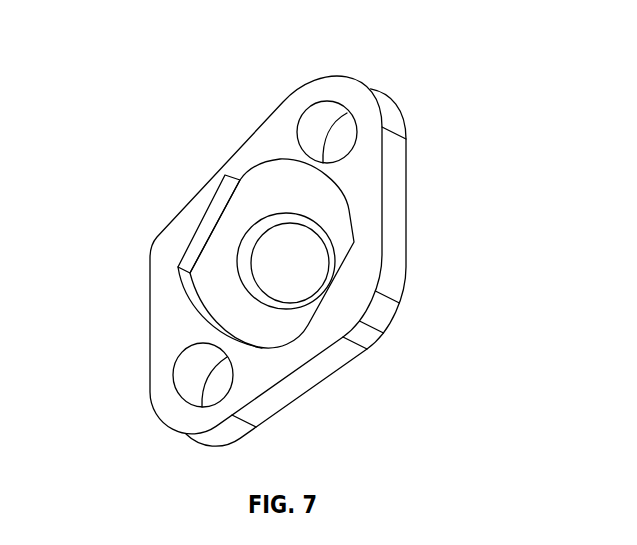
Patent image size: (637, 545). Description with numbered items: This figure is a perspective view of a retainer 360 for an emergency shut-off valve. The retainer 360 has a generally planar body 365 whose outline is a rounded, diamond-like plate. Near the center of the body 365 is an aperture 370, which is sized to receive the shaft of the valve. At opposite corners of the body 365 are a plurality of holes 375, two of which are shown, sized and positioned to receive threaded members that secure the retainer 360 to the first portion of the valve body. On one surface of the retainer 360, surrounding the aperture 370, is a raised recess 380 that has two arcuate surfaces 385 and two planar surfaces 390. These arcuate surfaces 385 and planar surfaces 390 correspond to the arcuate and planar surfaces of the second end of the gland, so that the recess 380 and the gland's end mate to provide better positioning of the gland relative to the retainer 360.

The retainer 360 is at (275, 254).
The generally planar body 365 is at (367, 175).
The aperture 370 is at (283, 284).
The holes 375 is at (331, 131).
The recess 380 is at (272, 246).
The arcuate surfaces 385 is at (350, 207).
The planar surfaces 390 is at (200, 224).